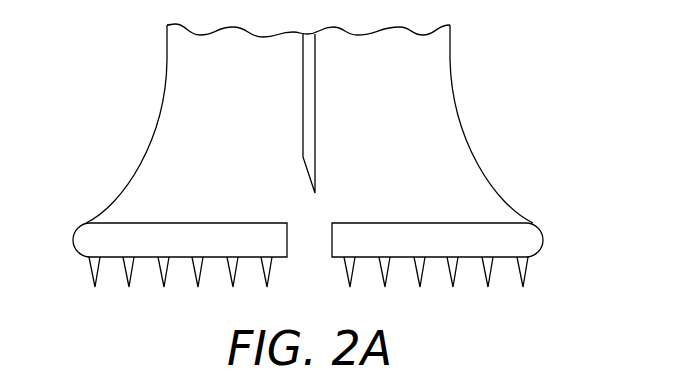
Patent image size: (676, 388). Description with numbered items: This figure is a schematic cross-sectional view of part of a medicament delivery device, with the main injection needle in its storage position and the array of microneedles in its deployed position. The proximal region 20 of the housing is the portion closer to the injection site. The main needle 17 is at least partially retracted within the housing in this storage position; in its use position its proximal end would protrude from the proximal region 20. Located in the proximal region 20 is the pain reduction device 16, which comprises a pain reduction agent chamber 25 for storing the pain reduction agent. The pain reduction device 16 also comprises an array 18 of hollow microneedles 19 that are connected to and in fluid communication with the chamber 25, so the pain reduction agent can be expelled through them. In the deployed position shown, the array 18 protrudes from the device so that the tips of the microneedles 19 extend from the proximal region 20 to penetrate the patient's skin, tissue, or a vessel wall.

The pain reduction device 16 is at (311, 187).
The main needle 17 is at (315, 95).
The array 18 is at (152, 294).
The microneedles 19 is at (92, 273).
The proximal region 20 is at (167, 68).
The pain reduction agent compartment or chamber 25 is at (545, 236).